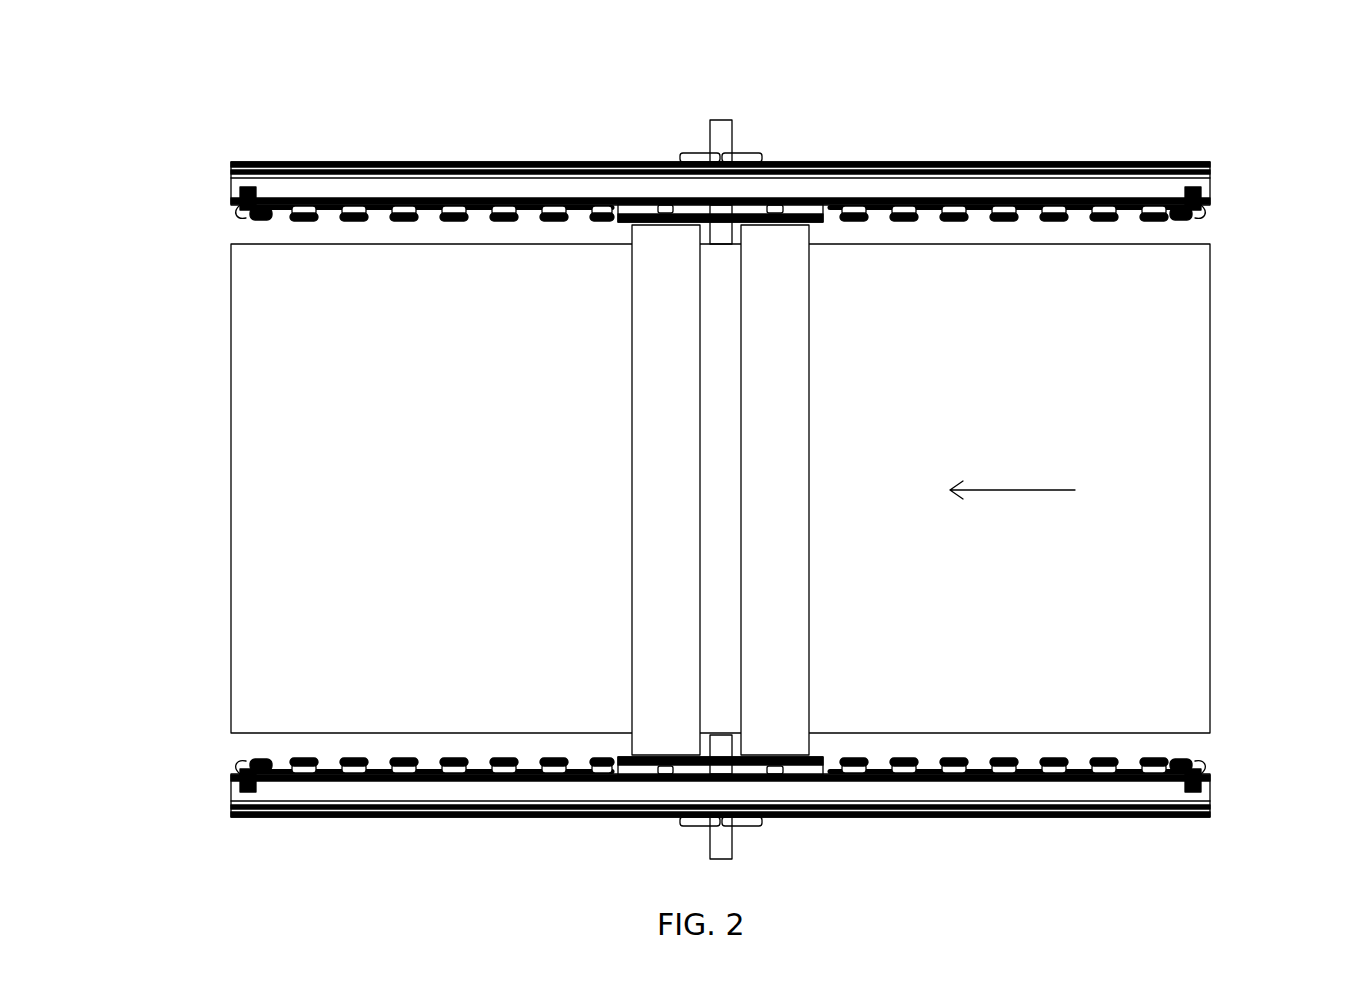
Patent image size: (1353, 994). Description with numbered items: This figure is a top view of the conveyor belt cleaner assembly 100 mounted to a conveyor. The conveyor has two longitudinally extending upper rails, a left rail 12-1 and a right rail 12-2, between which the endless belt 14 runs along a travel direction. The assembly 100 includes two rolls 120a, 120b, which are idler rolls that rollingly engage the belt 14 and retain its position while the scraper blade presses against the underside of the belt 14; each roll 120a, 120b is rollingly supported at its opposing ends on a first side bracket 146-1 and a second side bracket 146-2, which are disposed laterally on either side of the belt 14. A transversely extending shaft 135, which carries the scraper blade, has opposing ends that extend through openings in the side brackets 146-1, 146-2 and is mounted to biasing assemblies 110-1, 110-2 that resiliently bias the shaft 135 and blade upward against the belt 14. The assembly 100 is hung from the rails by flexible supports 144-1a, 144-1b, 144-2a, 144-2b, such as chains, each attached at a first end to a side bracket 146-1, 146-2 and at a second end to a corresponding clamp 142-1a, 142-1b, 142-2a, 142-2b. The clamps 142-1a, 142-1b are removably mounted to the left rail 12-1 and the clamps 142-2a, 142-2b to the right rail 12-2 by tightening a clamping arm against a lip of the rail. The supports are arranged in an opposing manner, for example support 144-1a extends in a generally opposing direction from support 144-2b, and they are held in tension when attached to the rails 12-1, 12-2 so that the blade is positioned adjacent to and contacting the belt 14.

The conveyor belt cleaner assembly 100 is at (378, 126).
The biasing assembly 110-1 is at (660, 129).
The biasing assembly 110-2 is at (673, 833).
The transversely extending shaft 135 is at (761, 155).
The first side bracket 146-1 is at (618, 220).
The second side bracket 146-2 is at (817, 757).
The left rail 12-1 is at (1037, 162).
The right rail 12-2 is at (1062, 818).
The clamp 142-1a is at (244, 192).
The clamp 142-1b is at (1197, 192).
The clamp 142-2a is at (243, 793).
The clamp 142-2b is at (1197, 795).
The flexible support 144-1a is at (307, 218).
The flexible support 144-1b is at (1133, 218).
The flexible support 144-2a is at (313, 760).
The flexible support 144-2b is at (1135, 760).
The roll 120a is at (632, 440).
The roll 120b is at (809, 432).
The belt 14 is at (1210, 500).